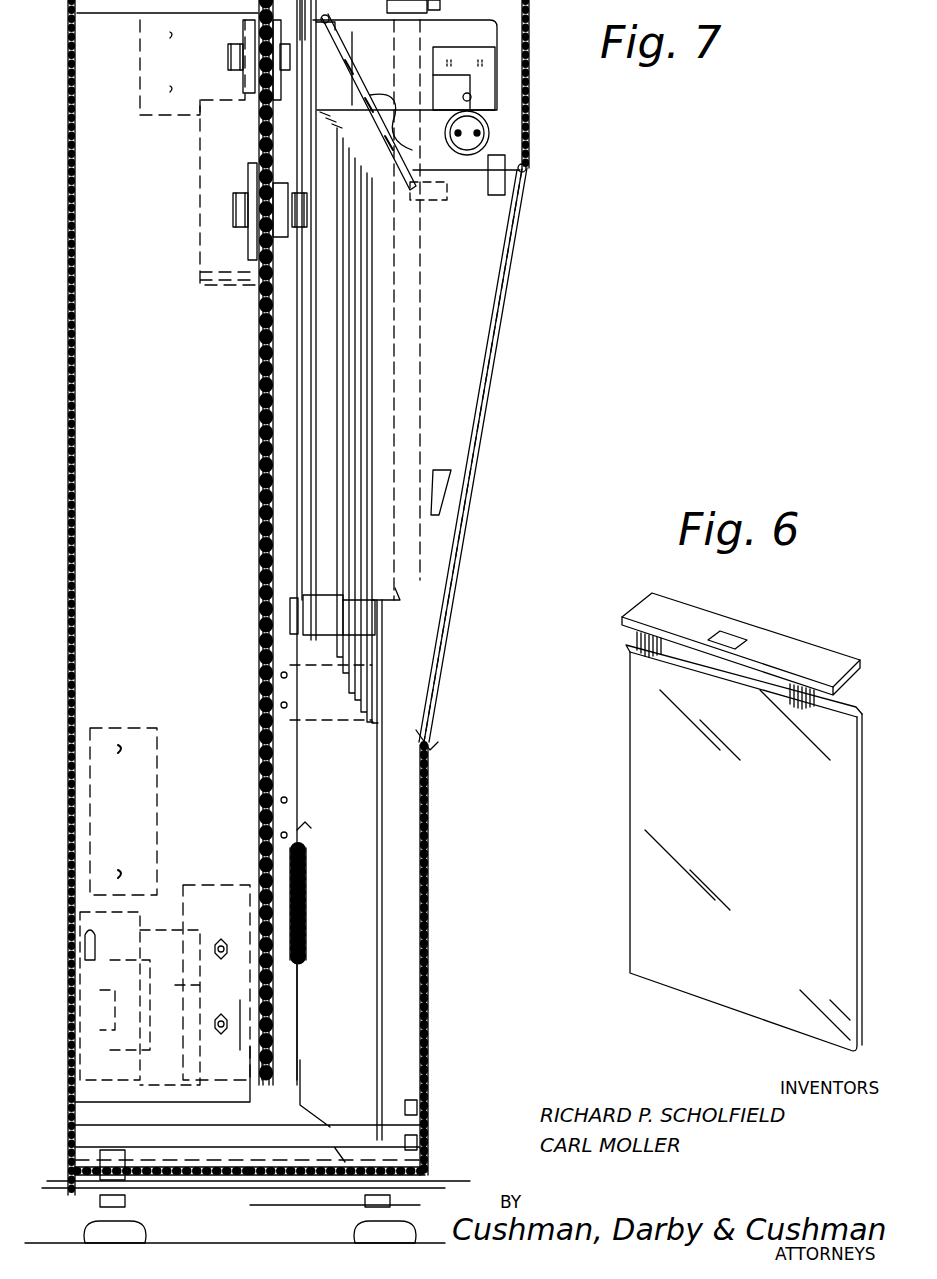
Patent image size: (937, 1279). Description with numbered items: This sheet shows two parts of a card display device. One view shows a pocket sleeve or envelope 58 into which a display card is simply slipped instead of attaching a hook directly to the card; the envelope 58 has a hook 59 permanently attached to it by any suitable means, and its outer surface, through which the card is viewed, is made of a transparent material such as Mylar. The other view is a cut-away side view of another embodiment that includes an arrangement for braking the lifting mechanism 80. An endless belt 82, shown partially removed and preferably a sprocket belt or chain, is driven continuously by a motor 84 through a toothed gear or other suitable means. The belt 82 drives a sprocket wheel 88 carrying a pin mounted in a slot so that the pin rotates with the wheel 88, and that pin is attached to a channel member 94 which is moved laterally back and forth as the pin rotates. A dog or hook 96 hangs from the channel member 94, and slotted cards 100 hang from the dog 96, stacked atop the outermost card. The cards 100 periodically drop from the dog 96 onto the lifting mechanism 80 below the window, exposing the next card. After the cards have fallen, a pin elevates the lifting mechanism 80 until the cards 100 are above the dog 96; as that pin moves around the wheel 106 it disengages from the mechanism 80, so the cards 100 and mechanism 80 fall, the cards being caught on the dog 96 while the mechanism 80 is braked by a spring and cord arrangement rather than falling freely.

In FIG. 6, the pocket sleeve or envelope 58 is at (655, 770).
In FIG. 6, the hook 59 is at (775, 645).
In FIG. 7, the lifting mechanism 80 is at (388, 603).
In FIG. 7, the endless belt 82 is at (258, 443).
In FIG. 7, the motor 84 is at (123, 1071).
In FIG. 7, the sprocket wheel 88 is at (240, 50).
In FIG. 7, the channel member 94 is at (388, 82).
In FIG. 7, the dog or hook 96 is at (445, 121).
In FIG. 7, the cards 100 is at (367, 350).
In FIG. 7, the wheel 106 is at (233, 212).